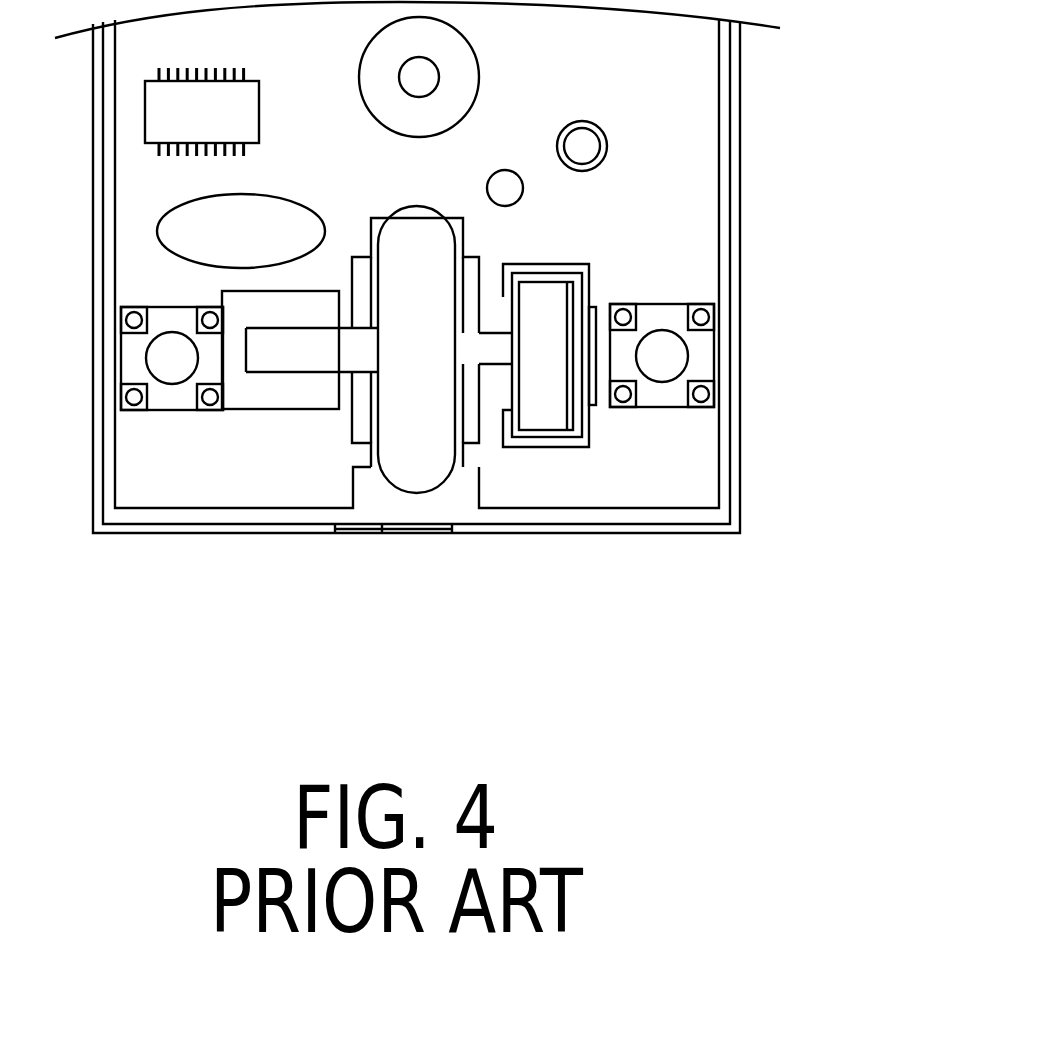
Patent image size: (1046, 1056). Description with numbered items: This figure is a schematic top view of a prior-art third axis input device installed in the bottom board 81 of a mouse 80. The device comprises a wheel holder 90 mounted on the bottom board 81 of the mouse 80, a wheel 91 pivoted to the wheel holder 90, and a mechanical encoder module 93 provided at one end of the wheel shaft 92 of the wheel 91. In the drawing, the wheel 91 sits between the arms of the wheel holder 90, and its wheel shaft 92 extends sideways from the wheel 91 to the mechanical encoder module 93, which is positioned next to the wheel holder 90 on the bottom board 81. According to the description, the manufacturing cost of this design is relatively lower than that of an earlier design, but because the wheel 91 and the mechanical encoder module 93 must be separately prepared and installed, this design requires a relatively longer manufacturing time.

The mouse 80 is at (733, 142).
The bottom board 81 is at (452, 500).
The wheel holder 90 is at (358, 415).
The wheel 91 is at (434, 397).
The wheel shaft 92 is at (482, 348).
The mechanical encoder module 93 is at (545, 363).